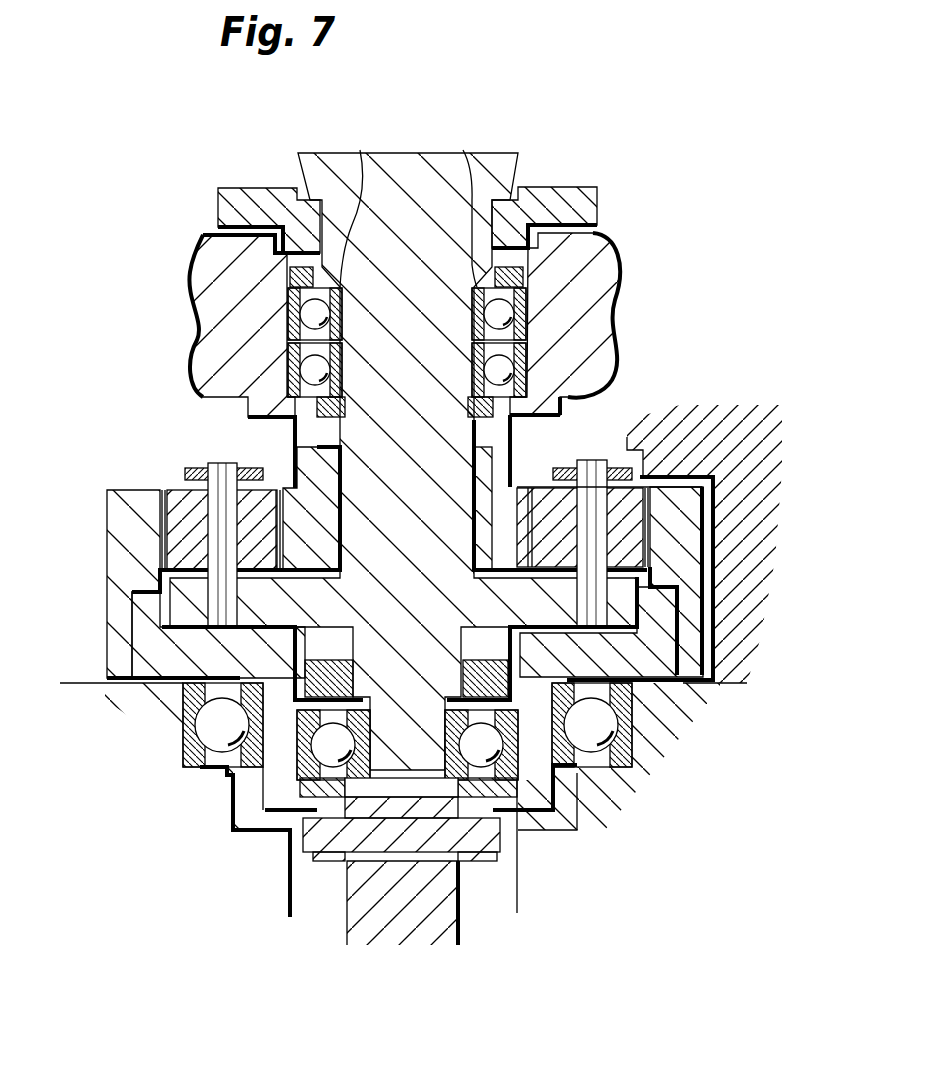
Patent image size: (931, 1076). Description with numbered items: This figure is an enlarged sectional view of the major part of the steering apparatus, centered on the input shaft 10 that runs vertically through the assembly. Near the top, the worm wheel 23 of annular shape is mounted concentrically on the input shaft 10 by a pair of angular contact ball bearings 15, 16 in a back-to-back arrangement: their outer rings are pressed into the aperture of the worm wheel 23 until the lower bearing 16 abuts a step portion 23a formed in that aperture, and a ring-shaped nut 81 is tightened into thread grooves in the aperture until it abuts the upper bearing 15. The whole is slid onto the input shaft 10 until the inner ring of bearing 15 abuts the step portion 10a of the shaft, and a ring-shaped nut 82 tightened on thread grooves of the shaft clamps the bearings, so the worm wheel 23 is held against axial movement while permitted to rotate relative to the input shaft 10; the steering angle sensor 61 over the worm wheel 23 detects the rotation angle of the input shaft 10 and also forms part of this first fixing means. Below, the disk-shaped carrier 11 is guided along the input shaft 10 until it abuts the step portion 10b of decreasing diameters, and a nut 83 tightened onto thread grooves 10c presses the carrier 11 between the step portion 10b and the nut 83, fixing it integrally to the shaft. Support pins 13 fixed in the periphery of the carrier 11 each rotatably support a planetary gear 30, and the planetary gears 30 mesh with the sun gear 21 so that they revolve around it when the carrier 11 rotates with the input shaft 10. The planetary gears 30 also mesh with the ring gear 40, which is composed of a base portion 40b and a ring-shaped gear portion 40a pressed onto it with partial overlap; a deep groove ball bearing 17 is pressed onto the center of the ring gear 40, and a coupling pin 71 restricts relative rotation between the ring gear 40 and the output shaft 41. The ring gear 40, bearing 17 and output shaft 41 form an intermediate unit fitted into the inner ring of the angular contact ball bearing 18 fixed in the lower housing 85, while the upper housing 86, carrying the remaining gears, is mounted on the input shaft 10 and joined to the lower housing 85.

The input shaft 10 is at (503, 190).
The step portion 10a is at (361, 153).
The step portion 10b is at (300, 478).
The thread grooves 10c is at (330, 700).
The carrier 11 is at (403, 798).
The support pin 13 is at (642, 478).
The angular contact ball bearing 15 is at (300, 318).
The angular contact ball bearing 16 is at (300, 373).
The deep groove ball bearing 17 is at (520, 830).
The angular contact ball bearing 18 is at (215, 730).
The sun gear 21 is at (237, 513).
The worm wheel 23 is at (610, 270).
The step portion 23a is at (548, 415).
The planetary gear 30 is at (703, 496).
The ring gear 40 is at (181, 595).
The gear portion 40a is at (125, 536).
The base portion 40b is at (206, 646).
The output shaft 41 is at (442, 934).
The steering angle sensor 61 is at (595, 210).
The coupling pin 71 is at (338, 852).
The nut 81 is at (235, 255).
The nut 82 is at (268, 408).
The nut 83 is at (315, 700).
The lower housing 85 is at (607, 780).
The upper housing 86 is at (735, 458).